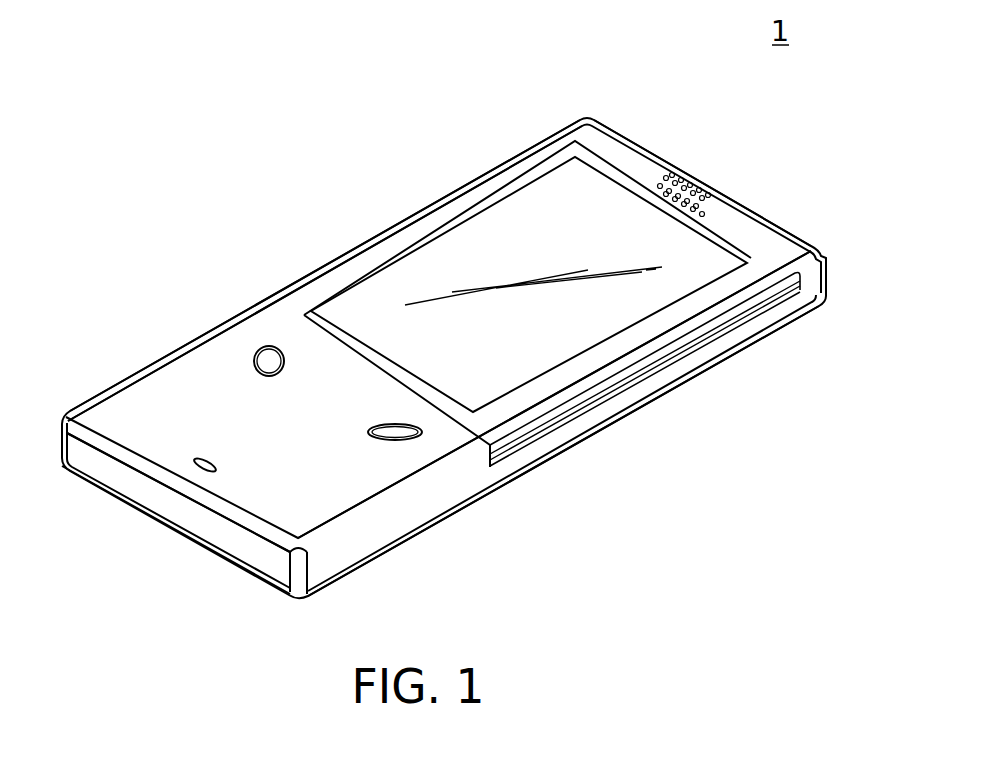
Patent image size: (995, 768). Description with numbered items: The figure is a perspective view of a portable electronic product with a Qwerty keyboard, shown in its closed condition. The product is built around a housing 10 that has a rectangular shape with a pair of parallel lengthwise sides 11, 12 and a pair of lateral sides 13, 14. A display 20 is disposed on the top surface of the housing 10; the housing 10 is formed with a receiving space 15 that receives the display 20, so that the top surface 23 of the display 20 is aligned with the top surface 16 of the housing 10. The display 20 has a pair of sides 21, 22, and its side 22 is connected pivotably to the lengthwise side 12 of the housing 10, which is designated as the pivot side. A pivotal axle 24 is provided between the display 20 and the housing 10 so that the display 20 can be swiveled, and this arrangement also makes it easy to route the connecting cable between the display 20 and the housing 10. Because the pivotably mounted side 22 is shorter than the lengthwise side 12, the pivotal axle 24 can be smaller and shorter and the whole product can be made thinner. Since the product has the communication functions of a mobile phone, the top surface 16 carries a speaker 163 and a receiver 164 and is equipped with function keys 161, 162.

The housing 10 is at (708, 184).
The lengthwise side 11 is at (548, 142).
The lengthwise side 12 is at (708, 358).
The lateral side 13 is at (648, 153).
The lateral side 14 is at (113, 462).
The receiving space 15 is at (452, 197).
The top surface 16 is at (190, 383).
The function key 161 is at (398, 443).
The function key 162 is at (269, 349).
The speaker 163 is at (722, 205).
The receiver 164 is at (205, 475).
The display 20 is at (510, 371).
The side 21 is at (377, 263).
The side 22 is at (592, 387).
The top surface 23 is at (713, 278).
The pivotal axle 24 is at (640, 375).